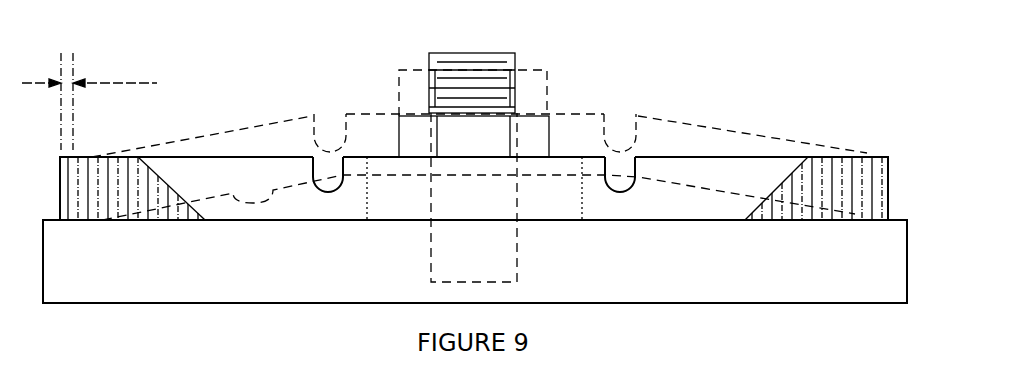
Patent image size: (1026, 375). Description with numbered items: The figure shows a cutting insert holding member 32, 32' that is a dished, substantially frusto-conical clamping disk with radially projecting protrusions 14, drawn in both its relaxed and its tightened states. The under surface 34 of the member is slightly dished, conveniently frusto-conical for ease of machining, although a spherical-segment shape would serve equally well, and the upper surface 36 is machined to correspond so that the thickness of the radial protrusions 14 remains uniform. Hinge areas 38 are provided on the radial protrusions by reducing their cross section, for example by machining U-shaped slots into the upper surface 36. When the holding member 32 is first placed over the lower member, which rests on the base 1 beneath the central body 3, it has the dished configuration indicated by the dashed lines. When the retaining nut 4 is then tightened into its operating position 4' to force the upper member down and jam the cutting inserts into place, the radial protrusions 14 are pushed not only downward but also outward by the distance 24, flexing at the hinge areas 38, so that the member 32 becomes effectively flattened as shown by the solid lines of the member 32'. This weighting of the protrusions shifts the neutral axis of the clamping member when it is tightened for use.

The base plate 1 is at (172, 265).
The semiconductor chip 3 is at (466, 65).
The retaining nut 4 is at (483, 155).
The operating position of retaining nut 4' is at (524, 112).
The radial protrusions 14 is at (378, 128).
The outward displacement distance 24 is at (91, 101).
The cutting insert holding member 32 is at (752, 117).
The cutting insert holding member (flattened) 32' is at (487, 162).
The under surface 34 is at (237, 190).
The upper surface 36 is at (210, 135).
The hinge areas 38 is at (327, 131).